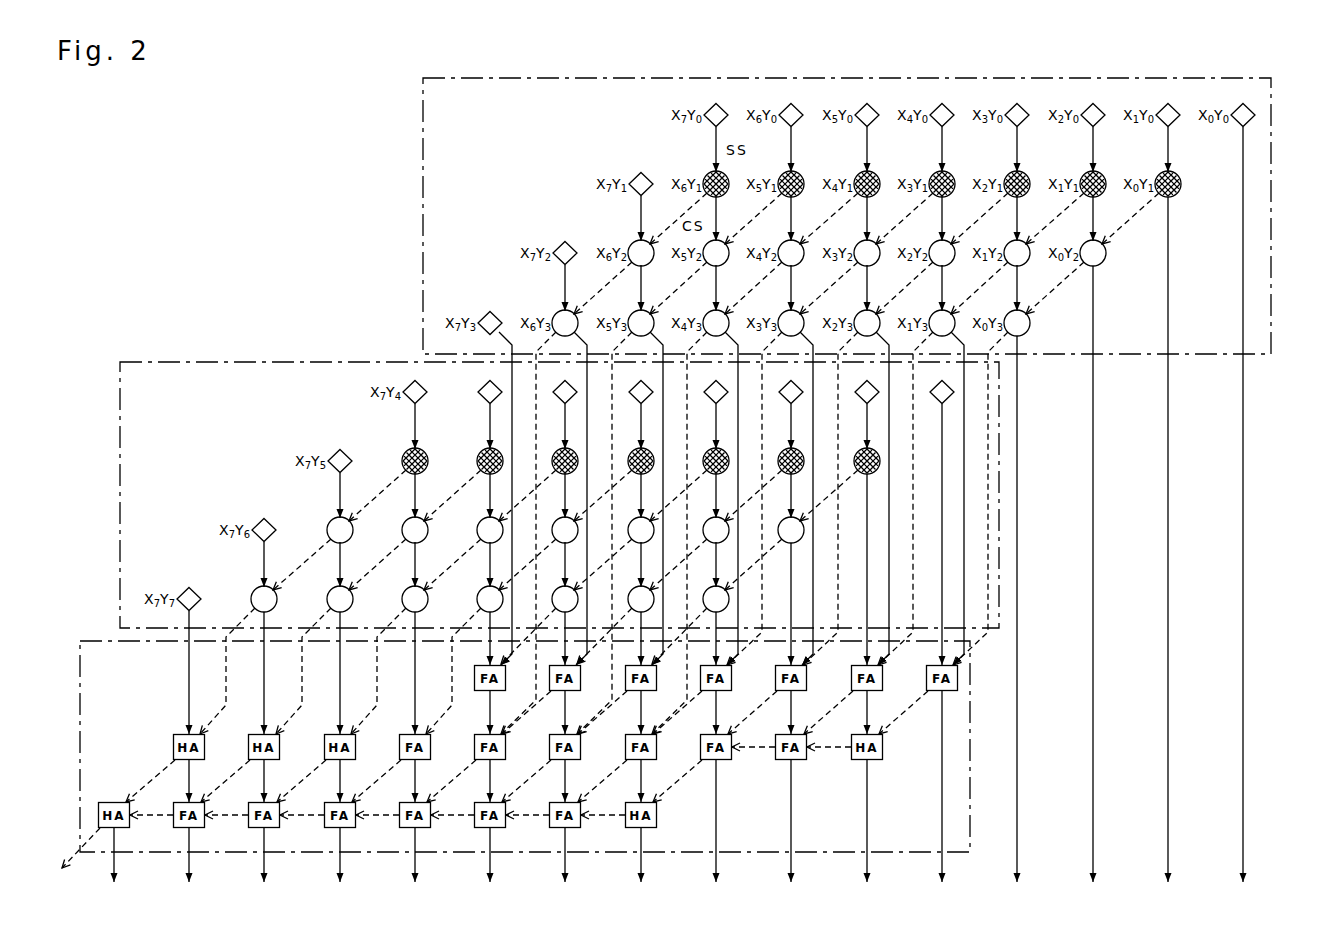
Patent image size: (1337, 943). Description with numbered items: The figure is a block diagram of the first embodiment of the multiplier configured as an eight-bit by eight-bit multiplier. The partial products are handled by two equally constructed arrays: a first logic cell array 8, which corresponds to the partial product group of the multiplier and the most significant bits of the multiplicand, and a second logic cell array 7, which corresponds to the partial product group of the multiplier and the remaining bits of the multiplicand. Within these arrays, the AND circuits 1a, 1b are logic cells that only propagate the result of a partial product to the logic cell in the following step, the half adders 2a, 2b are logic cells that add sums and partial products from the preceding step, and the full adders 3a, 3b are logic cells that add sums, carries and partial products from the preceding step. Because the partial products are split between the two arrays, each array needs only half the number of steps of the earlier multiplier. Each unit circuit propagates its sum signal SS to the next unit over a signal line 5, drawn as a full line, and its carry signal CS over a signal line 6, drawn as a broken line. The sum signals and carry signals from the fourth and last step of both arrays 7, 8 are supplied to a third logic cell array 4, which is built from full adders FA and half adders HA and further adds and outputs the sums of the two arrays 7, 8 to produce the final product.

The AND circuit 1a is at (1255, 115).
The half adder 2a is at (1181, 184).
The full adder 3a is at (1106, 253).
The AND circuit 1b is at (954, 392).
The half adder 2b is at (880, 461).
The full adder 3b is at (804, 530).
The third logic cell array 4 is at (96, 641).
The signal line 5 is at (714, 150).
The signal line 6 is at (678, 217).
The second logic cell array 7 is at (423, 180).
The first logic cell array 8 is at (146, 362).